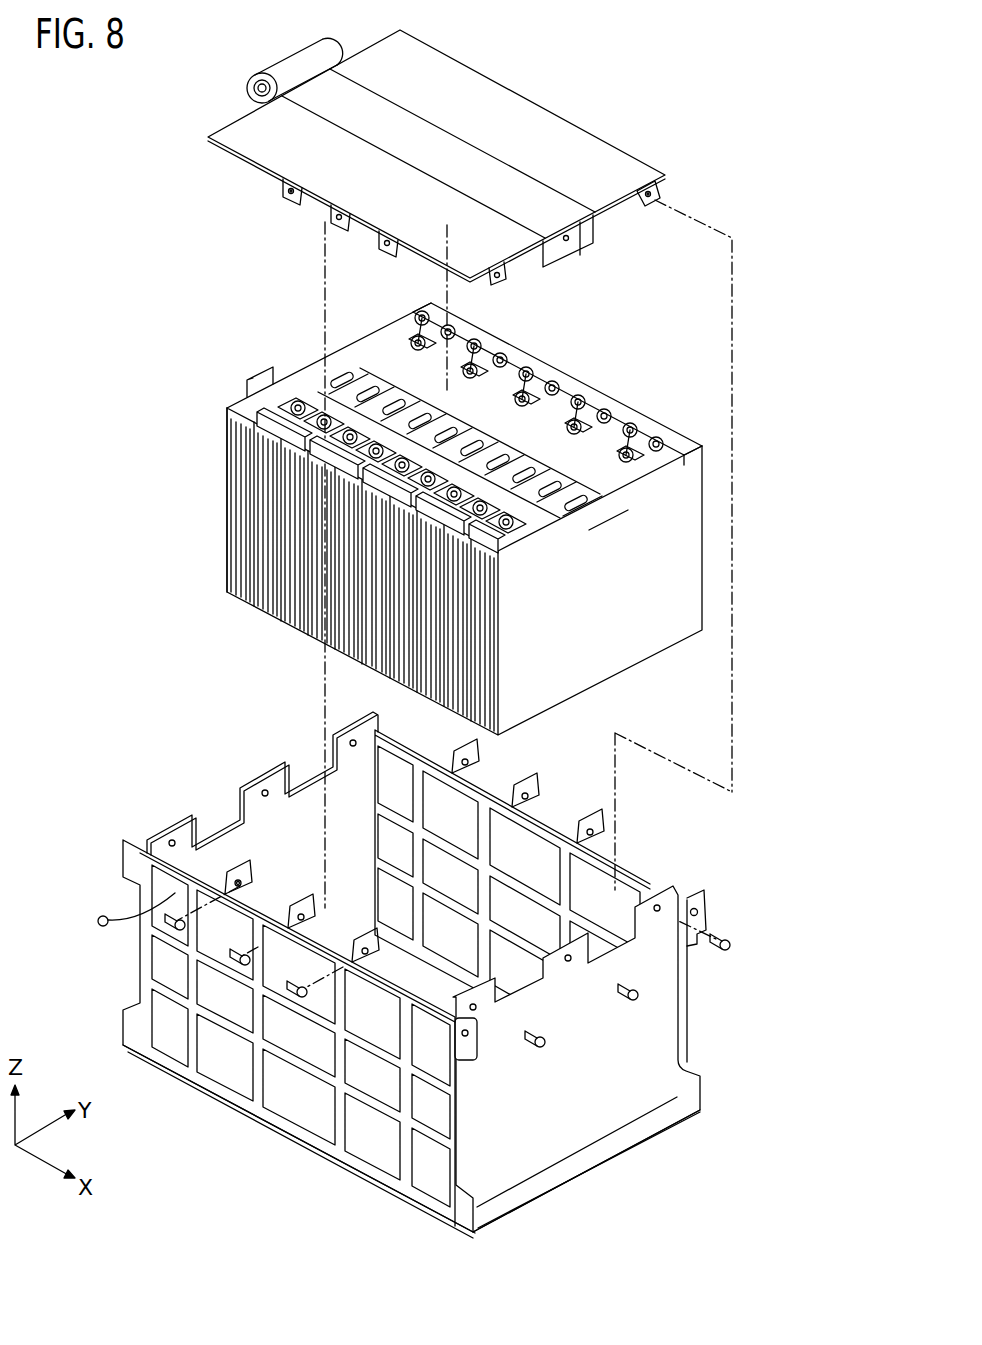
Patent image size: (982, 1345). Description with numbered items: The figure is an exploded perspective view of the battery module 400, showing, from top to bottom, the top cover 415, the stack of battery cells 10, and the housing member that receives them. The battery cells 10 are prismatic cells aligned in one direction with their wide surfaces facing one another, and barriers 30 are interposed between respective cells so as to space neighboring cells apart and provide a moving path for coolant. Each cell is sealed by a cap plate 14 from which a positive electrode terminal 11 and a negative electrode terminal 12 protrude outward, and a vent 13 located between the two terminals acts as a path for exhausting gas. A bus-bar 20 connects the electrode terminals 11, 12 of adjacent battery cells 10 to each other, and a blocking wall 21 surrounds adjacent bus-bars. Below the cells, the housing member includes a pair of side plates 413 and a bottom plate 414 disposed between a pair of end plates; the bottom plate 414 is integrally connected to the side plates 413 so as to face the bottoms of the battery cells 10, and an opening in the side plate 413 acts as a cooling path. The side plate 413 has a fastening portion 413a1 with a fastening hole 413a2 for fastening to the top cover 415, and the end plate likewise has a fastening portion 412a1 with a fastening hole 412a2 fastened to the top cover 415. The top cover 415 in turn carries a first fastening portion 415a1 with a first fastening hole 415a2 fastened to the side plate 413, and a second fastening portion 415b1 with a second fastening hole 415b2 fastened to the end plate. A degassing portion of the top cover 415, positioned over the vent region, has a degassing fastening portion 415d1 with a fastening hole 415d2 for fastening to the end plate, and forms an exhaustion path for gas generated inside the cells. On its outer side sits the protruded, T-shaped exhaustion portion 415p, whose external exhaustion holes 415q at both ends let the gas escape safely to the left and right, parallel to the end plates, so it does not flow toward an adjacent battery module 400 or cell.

The battery module 400 is at (444, 625).
The top cover 415 is at (447, 172).
The exhaustion portion 415p is at (278, 50).
The external exhaustion hole 415q is at (258, 95).
The first fastening portion 415a1 is at (282, 184).
The first fastening hole 415a2 is at (288, 196).
The second fastening portion 415b1 is at (660, 190).
The second fastening hole 415b2 is at (647, 200).
The degassing fastening portion 415d1 is at (560, 250).
The fastening hole 415d2 is at (568, 238).
The battery cell 10 is at (264, 595).
The barrier 30 is at (318, 620).
The bus-bar 20 is at (487, 356).
The blocking wall 21 is at (520, 340).
The positive electrode terminal 11 is at (590, 400).
The negative electrode terminal 12 is at (613, 403).
The vent 13 is at (451, 409).
The cap plate 14 is at (335, 372).
The side plate 413 is at (548, 828).
The fastening portion 413a1 is at (228, 884).
The fastening hole 413a2 is at (237, 880).
The fastening portion 412a1 is at (664, 891).
The fastening hole 412a2 is at (700, 905).
The bottom plate 414 is at (650, 1130).